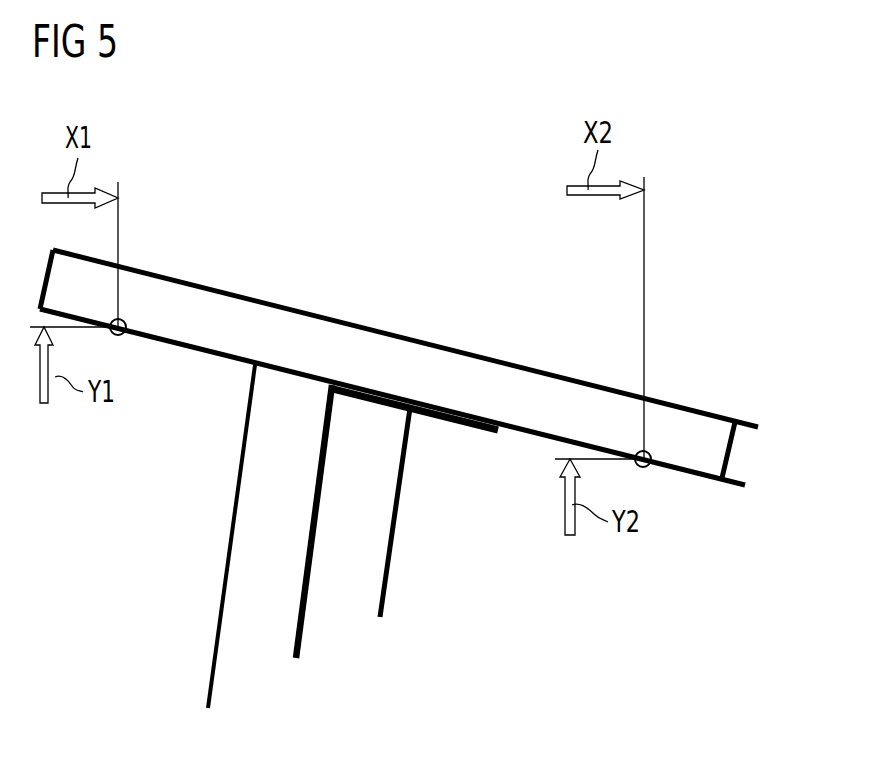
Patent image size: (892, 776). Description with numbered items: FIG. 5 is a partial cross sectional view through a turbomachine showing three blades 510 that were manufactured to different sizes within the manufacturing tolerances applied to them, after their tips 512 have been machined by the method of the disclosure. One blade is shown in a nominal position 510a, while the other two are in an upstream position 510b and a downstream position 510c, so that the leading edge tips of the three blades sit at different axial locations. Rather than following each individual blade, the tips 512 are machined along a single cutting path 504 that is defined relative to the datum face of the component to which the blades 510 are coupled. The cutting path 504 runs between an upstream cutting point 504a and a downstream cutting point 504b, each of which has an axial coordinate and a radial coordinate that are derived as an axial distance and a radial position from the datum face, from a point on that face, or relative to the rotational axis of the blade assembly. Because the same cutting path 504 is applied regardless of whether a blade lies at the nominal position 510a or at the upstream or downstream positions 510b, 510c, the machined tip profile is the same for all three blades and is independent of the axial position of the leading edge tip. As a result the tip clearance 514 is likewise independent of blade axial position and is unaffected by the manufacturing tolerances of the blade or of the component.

The cutting path 504 is at (220, 350).
The upstream cutting point 504a is at (123, 332).
The downstream cutting point 504b is at (650, 465).
The blades 510 is at (345, 555).
The nominal position 510a is at (305, 615).
The upstream position 510b is at (218, 665).
The downstream position 510c is at (430, 554).
The tips 512 is at (305, 372).
The tip clearance 514 is at (735, 448).